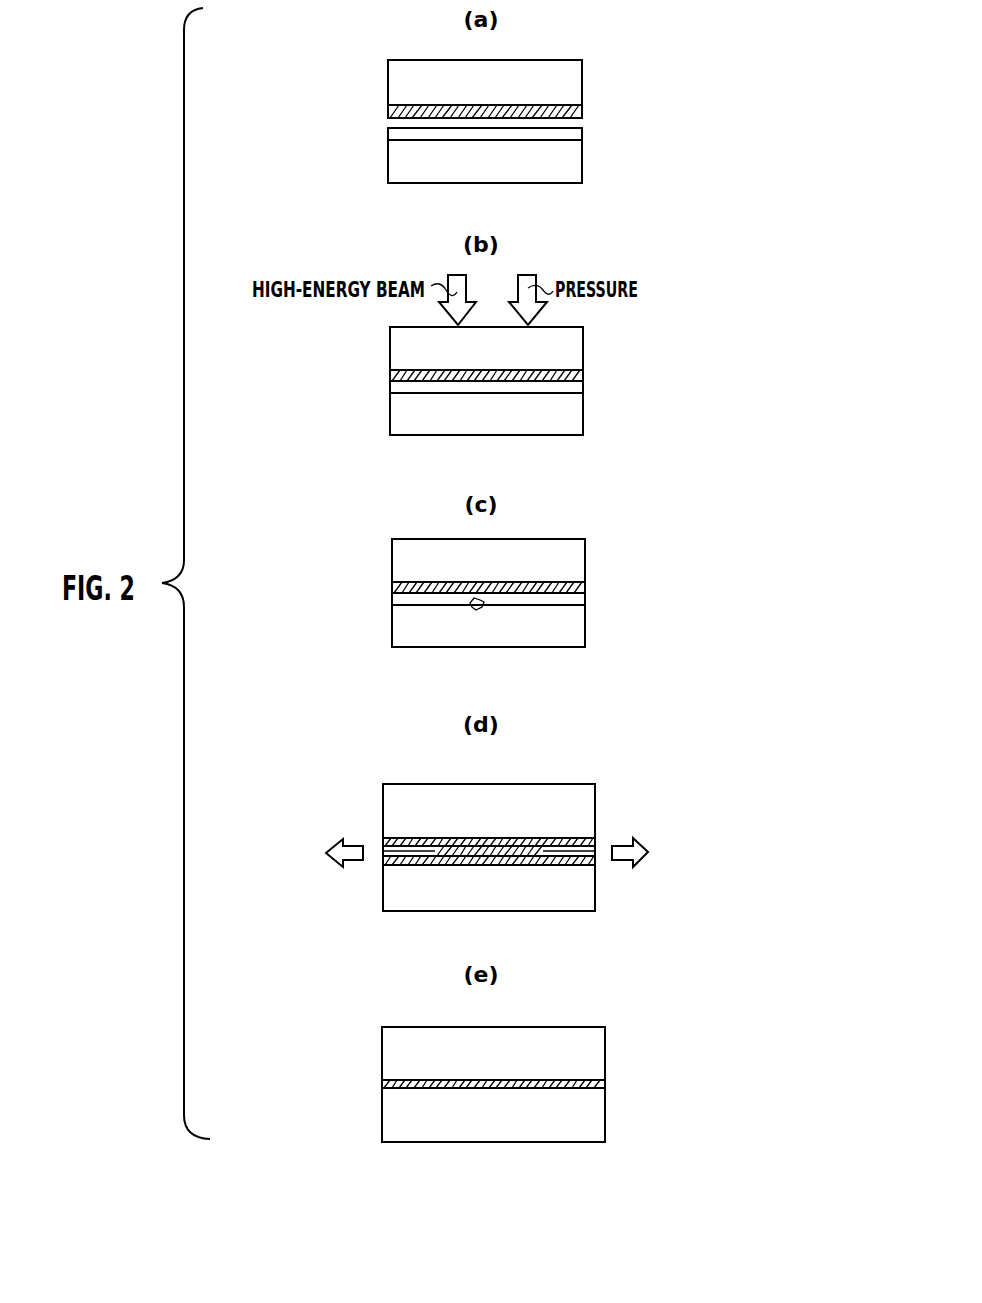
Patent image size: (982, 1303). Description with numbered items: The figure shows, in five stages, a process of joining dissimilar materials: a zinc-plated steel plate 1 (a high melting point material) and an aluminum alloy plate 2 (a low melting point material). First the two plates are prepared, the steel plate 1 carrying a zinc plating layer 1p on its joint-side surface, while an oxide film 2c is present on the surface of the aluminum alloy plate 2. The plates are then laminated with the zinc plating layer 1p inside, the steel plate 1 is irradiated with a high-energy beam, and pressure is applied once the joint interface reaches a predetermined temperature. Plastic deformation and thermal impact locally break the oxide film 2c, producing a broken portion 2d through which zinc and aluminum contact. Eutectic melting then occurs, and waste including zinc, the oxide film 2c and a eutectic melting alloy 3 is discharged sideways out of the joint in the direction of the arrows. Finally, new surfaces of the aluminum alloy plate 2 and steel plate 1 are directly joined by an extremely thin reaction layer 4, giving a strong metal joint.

The zinc-plated steel plate 1 is at (570, 88).
The zinc plating layer 1p is at (388, 107).
The aluminum alloy plate 2 is at (565, 160).
The oxide film 2c is at (418, 135).
The broken portion 2d is at (484, 607).
The eutectic melting alloy 3 is at (495, 838).
The reaction layer 4 is at (535, 1080).